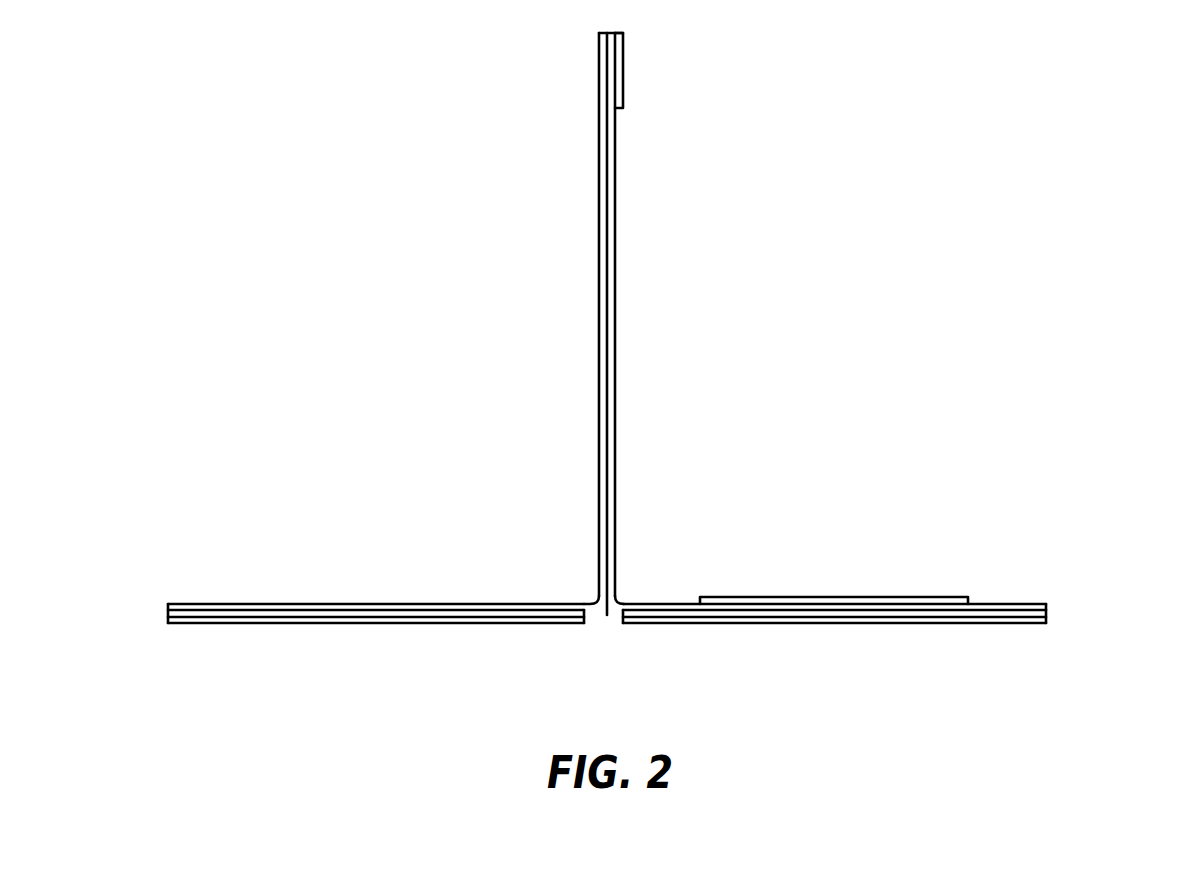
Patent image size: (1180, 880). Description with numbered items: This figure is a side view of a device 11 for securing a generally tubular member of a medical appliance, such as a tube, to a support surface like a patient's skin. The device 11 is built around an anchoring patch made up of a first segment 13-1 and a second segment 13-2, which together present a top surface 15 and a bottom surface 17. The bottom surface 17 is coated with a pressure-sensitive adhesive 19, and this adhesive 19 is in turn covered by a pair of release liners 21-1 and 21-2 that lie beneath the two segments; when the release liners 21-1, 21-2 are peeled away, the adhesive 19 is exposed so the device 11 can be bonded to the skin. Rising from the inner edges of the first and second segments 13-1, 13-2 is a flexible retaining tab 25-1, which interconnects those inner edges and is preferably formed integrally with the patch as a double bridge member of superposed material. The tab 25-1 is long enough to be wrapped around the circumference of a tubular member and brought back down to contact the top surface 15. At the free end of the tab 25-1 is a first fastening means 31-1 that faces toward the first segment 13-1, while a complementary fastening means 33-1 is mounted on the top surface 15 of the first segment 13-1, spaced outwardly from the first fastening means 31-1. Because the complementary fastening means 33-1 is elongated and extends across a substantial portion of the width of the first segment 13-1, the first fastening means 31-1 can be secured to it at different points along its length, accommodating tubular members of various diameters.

The device 11 is at (326, 238).
The first segment 13-1 is at (1046, 605).
The second segment 13-2 is at (168, 605).
The top surface 15 is at (565, 602).
The bottom surface 17 is at (592, 615).
The pressure-sensitive adhesive 19 is at (187, 615).
The release liner 21-1 is at (877, 625).
The release liner 21-2 is at (328, 623).
The flexible retaining tab 25-1 is at (597, 240).
The first fastening means 31-1 is at (625, 77).
The complementary fastening means 33-1 is at (920, 598).